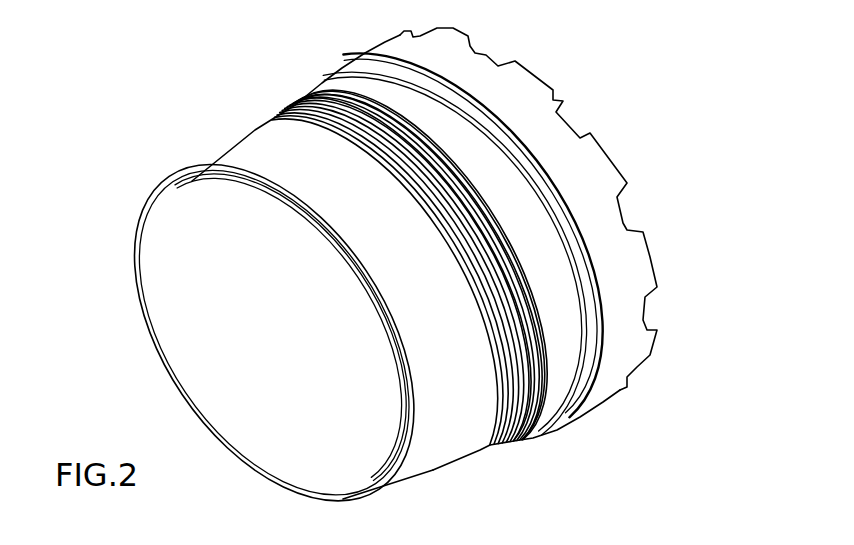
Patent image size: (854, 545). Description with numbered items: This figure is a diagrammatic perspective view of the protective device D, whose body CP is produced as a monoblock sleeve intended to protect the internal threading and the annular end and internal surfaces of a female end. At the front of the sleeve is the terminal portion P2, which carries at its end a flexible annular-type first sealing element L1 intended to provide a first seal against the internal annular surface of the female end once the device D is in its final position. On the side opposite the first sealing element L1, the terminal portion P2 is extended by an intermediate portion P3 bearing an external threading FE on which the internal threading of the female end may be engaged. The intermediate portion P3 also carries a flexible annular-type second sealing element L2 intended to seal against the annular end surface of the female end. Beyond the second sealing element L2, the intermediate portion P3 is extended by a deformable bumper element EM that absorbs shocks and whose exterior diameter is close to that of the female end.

The first sealing element L1 is at (134, 262).
The second sealing element L2 is at (312, 86).
The body CP is at (219, 159).
The external threading FE is at (264, 117).
The bumper element EM is at (556, 90).
The device D is at (663, 161).
The terminal portion P2 is at (440, 480).
The intermediate portion P3 is at (524, 451).